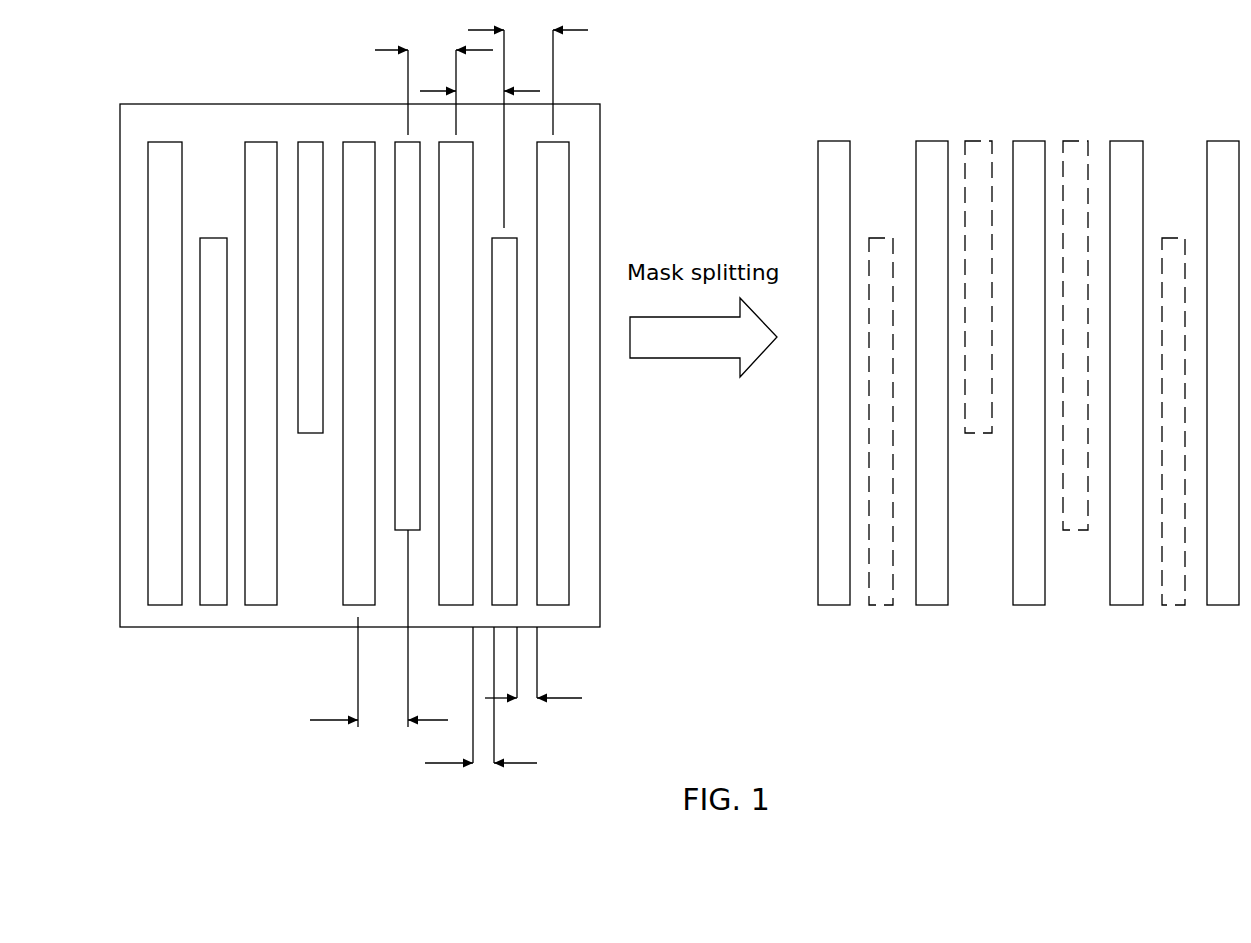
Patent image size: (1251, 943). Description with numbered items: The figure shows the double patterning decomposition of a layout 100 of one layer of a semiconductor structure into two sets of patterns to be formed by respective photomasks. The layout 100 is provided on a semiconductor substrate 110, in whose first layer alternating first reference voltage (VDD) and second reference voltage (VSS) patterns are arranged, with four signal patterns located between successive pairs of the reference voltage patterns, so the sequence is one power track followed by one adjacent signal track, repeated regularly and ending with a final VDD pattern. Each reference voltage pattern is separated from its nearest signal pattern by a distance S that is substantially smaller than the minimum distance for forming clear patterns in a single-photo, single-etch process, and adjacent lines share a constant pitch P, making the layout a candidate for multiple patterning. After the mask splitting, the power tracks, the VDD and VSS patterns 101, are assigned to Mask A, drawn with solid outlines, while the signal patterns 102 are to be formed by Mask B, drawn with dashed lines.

The layout 100 is at (320, 666).
The semiconductor substrate 110 is at (248, 104).
The VDD and VSS patterns 101 is at (1223, 141).
The signal patterns 102 is at (979, 433).